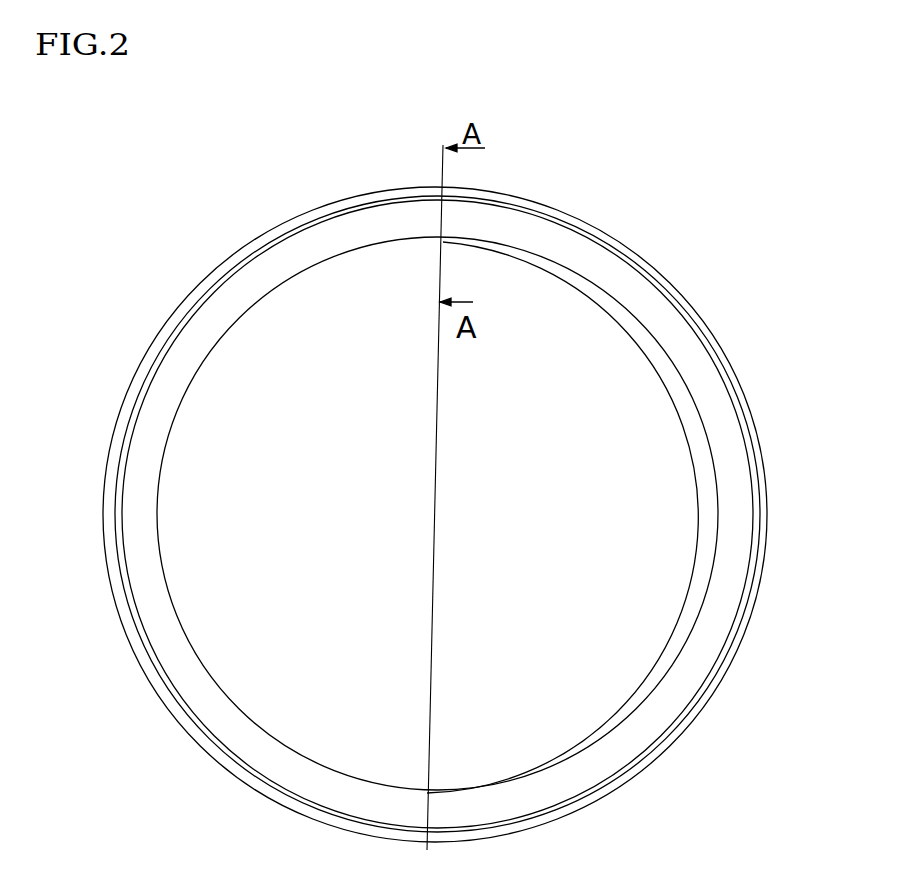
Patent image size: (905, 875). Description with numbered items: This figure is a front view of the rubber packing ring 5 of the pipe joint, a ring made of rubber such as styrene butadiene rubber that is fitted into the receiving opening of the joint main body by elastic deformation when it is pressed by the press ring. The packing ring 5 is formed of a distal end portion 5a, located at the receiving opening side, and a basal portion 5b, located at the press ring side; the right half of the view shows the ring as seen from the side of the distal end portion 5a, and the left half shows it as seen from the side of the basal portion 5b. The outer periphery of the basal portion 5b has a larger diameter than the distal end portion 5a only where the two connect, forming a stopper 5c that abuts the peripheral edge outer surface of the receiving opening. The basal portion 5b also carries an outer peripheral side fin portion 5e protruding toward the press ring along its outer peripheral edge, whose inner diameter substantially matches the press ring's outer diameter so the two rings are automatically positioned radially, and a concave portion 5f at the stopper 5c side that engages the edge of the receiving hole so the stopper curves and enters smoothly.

The packing ring 5 is at (558, 203).
The distal end portion 5a is at (692, 352).
The basal portion 5b is at (166, 317).
The stopper 5c is at (235, 257).
The outer peripheral side fin portion 5e is at (338, 208).
The concave portion 5f is at (755, 525).